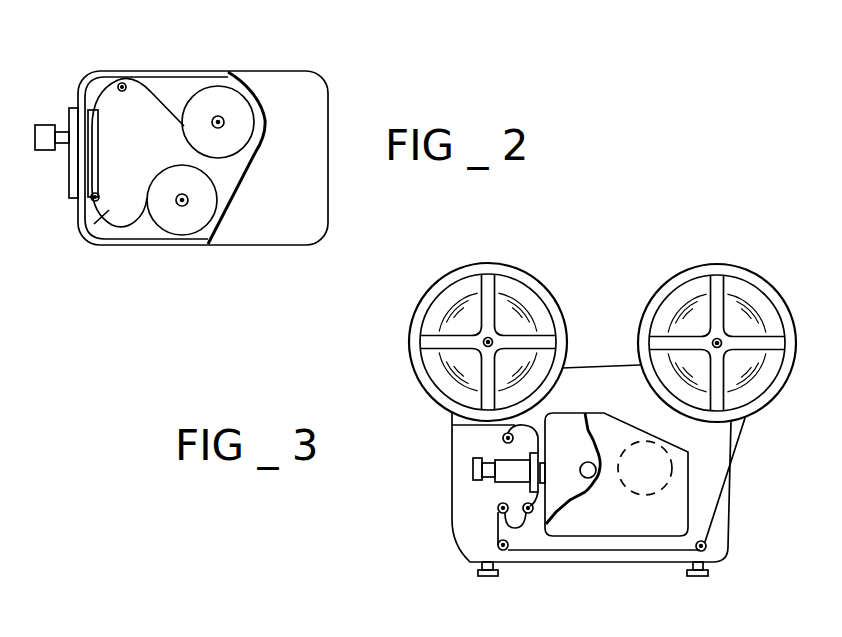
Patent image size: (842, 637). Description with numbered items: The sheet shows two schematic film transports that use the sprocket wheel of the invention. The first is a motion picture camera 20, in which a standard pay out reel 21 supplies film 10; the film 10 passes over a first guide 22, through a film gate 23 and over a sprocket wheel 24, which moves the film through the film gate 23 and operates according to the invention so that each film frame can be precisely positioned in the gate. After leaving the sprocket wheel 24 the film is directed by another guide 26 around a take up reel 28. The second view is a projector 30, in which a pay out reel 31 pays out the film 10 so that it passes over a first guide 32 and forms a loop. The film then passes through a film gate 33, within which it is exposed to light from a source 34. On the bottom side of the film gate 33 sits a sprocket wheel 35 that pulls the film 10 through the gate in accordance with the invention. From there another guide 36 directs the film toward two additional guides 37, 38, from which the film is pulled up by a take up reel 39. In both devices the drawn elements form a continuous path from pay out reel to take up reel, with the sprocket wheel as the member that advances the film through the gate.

In FIG. 2, the film 10 is at (153, 92).
In FIG. 3, the film 10 is at (505, 435).
In FIG. 2, the motion picture camera 20 is at (290, 71).
In FIG. 2, the pay out reel 21 is at (205, 97).
In FIG. 2, the first guide 22 is at (118, 82).
In FIG. 2, the film gate 23 is at (93, 148).
In FIG. 2, the sprocket wheel 24 is at (84, 204).
In FIG. 2, the guide 26 is at (118, 227).
In FIG. 2, the take up reel 28 is at (187, 222).
In FIG. 3, the projector 30 is at (737, 489).
In FIG. 3, the pay out reel 31 is at (513, 273).
In FIG. 3, the first guide 32 is at (503, 443).
In FIG. 3, the film gate 33 is at (547, 465).
In FIG. 3, the light source 34 is at (590, 481).
In FIG. 3, the sprocket wheel 35 is at (525, 505).
In FIG. 3, the guide 36 is at (498, 508).
In FIG. 3, the guide 37 is at (505, 549).
In FIG. 3, the guide 38 is at (706, 546).
In FIG. 3, the take up reel 39 is at (675, 286).